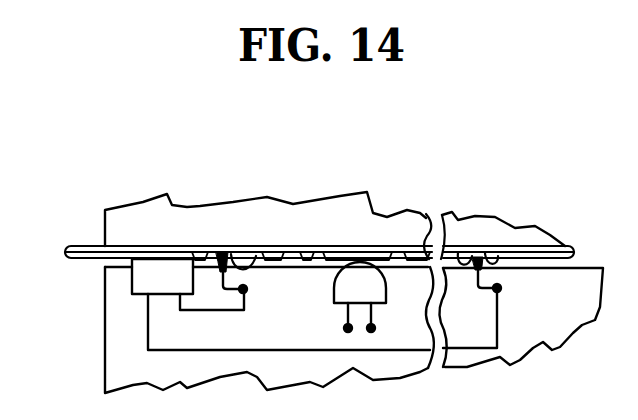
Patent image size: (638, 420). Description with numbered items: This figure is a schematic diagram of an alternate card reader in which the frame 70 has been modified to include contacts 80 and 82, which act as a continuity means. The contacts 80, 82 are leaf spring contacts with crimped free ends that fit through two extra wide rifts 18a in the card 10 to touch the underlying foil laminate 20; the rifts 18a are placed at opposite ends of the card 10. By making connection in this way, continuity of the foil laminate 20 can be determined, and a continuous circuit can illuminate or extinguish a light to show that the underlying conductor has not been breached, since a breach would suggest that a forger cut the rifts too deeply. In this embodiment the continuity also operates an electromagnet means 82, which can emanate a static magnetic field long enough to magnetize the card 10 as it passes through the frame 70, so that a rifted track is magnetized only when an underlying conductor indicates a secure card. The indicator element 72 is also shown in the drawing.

The card 10 is at (78, 246).
The foil laminate 20 is at (93, 246).
The frame 70 is at (113, 345).
The light emitting diode 72 is at (338, 283).
The contact 80 is at (215, 255).
The contact 82 is at (132, 280).
The rifts 18a is at (255, 268).